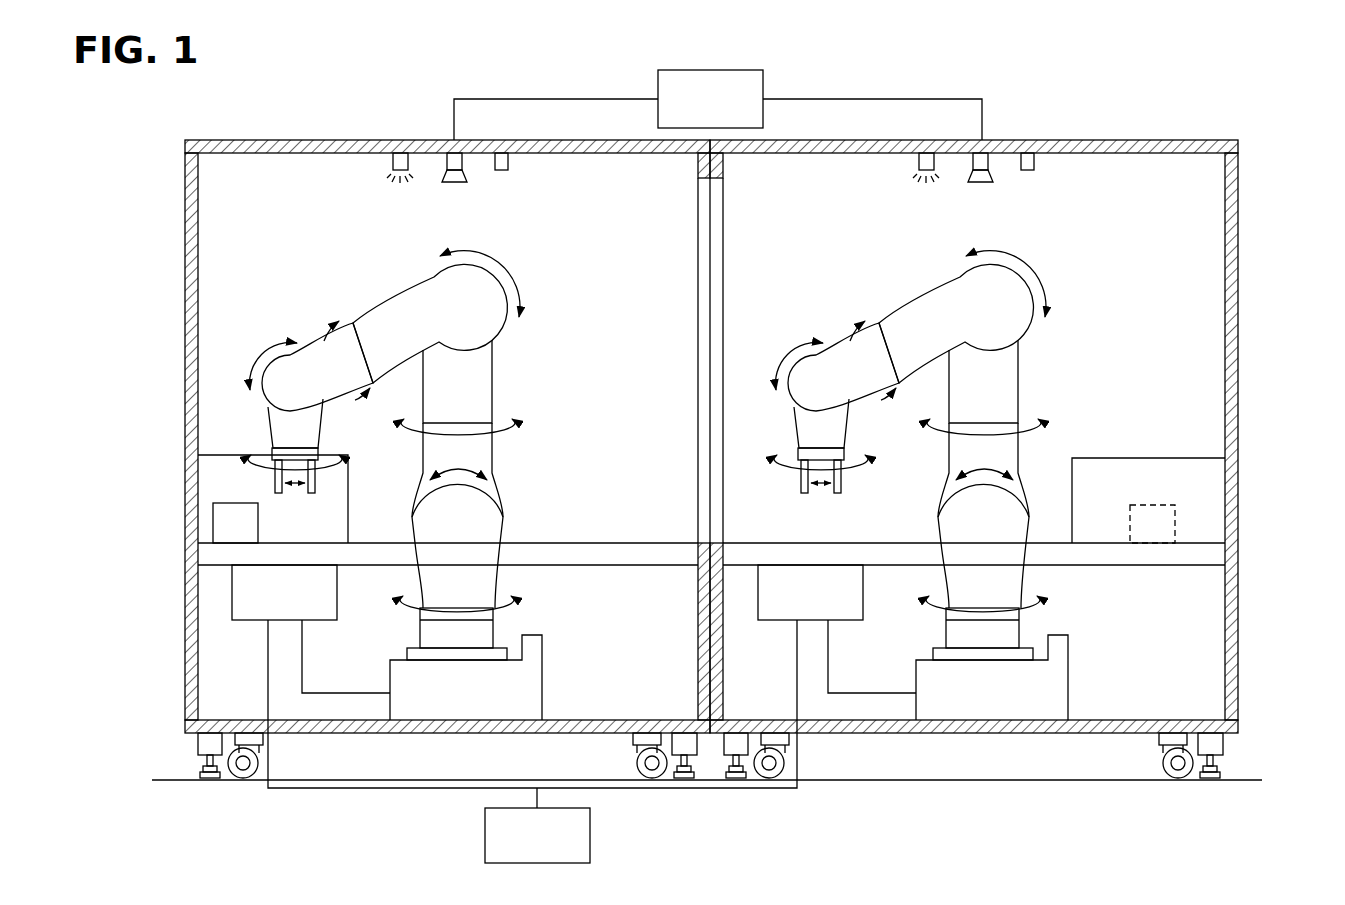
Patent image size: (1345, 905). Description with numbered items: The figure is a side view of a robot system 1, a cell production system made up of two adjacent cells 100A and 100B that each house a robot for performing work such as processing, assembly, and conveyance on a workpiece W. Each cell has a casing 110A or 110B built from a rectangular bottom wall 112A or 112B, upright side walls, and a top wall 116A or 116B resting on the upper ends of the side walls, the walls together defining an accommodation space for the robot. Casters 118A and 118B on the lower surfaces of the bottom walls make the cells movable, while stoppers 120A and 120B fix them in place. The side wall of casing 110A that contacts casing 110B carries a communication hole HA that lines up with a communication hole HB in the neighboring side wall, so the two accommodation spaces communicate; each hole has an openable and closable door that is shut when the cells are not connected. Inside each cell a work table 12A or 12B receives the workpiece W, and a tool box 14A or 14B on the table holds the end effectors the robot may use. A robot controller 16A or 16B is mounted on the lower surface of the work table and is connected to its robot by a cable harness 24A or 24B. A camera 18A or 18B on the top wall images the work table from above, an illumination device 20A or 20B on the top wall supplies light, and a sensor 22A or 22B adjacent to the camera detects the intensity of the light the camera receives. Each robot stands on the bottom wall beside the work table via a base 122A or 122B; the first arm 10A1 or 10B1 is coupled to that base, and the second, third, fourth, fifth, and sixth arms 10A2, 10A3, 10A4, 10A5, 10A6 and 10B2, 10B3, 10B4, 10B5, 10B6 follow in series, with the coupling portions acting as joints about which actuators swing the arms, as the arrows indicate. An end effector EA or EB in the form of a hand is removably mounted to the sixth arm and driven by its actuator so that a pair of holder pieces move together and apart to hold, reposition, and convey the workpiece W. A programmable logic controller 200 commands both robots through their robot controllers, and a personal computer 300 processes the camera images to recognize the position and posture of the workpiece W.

The robot system 1 is at (165, 135).
The cell 100A is at (182, 155).
The cell 100B is at (1177, 125).
The casing 110A is at (160, 270).
The casing 110B is at (1247, 220).
The bottom wall 112A is at (447, 735).
The bottom wall 112B is at (985, 735).
The top wall 116A is at (580, 153).
The top wall 116B is at (1115, 155).
The casters 118A is at (240, 780).
The casters 118B is at (973, 783).
The stoppers 120A is at (197, 748).
The stoppers 120B is at (950, 783).
The base 122A is at (542, 672).
The base 122B is at (1034, 677).
The work table 12A is at (635, 568).
The work table 12B is at (1177, 568).
The tool box 14A is at (235, 455).
The tool box 14B is at (1150, 458).
The robot controller 16A is at (242, 625).
The robot controller 16B is at (801, 624).
The camera 18A is at (453, 182).
The camera 18B is at (965, 194).
The illumination device 20A is at (390, 158).
The illumination device 20B is at (891, 171).
The sensor 22A is at (502, 172).
The sensor 22B is at (1044, 190).
The cable harness 24A is at (340, 693).
The cable harness 24B is at (872, 656).
The first arm 10A1 is at (470, 575).
The second arm 10A2 is at (475, 452).
The third arm 10A3 is at (470, 363).
The fourth arm 10A4 is at (410, 318).
The fifth arm 10A5 is at (315, 358).
The sixth arm 10A6 is at (308, 428).
The first arm 10B1 is at (1018, 595).
The second arm 10B2 is at (1011, 483).
The third arm 10B3 is at (1001, 387).
The fourth arm 10B4 is at (962, 317).
The fifth arm 10B5 is at (837, 357).
The sixth arm 10B6 is at (846, 434).
The end effector EA is at (318, 485).
The end effector EB is at (850, 481).
The communication hole HA is at (700, 180).
The communication hole HB is at (718, 180).
The workpiece W is at (258, 522).
The programmable logic controller 200 is at (485, 828).
The personal computer 300 is at (765, 113).